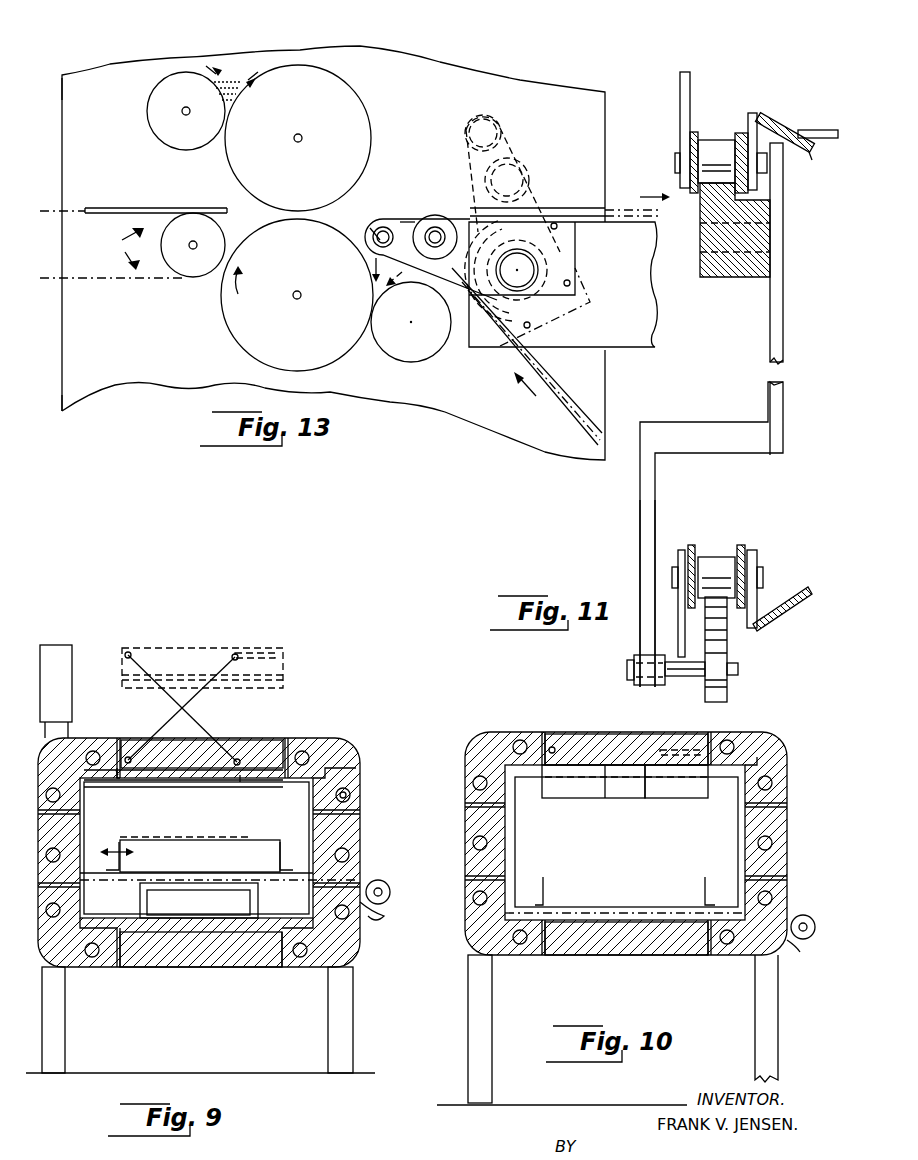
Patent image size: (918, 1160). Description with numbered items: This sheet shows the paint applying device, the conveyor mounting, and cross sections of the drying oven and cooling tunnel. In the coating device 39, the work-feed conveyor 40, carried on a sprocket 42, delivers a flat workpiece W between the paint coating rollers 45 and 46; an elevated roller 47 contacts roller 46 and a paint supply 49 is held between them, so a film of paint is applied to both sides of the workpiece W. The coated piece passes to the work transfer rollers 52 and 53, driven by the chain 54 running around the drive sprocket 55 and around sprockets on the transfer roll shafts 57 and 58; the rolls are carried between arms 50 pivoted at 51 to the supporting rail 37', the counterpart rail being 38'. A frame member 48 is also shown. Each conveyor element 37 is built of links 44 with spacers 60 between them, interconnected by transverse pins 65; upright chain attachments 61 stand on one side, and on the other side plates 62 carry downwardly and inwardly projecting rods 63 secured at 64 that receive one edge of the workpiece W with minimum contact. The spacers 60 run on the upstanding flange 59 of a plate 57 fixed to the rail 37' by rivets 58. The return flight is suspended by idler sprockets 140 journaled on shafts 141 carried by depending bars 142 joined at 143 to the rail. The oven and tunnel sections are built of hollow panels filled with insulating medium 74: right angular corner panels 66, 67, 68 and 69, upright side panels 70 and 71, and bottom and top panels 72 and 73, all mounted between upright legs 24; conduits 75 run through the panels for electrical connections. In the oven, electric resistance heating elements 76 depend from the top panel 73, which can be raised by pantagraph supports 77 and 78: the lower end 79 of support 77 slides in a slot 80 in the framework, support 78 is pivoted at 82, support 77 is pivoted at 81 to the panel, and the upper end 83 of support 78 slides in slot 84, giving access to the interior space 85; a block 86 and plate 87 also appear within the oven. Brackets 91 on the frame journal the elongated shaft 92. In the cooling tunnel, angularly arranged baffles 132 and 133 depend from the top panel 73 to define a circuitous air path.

In FIG. 9, the upright legs 24 is at (64, 1044).
In FIG. 10, the upright legs 24 is at (755, 998).
In FIG. 13, the conveyor element 37 is at (527, 356).
In FIG. 11, the conveyor element 37 is at (711, 70).
In FIG. 13, the supporting rail 37' is at (571, 298).
In FIG. 11, the supporting rail 37' is at (758, 299).
In FIG. 9, the supporting rail 37' is at (128, 856).
In FIG. 10, the supporting rail 37' is at (566, 888).
In FIG. 9, the supporting rail 38' is at (264, 856).
In FIG. 10, the supporting rail 38' is at (625, 892).
In FIG. 13, the coating device 39 is at (82, 420).
In FIG. 13, the work-feed conveyor 40 is at (119, 249).
In FIG. 13, the sprocket 42 is at (182, 266).
In FIG. 11, the links 44 is at (738, 136).
In FIG. 13, the paint coating roller 45 is at (262, 333).
In FIG. 13, the paint coating roller 46 is at (305, 85).
In FIG. 13, the elevated roller 47 is at (165, 125).
In FIG. 13, the frame 48 is at (75, 82).
In FIG. 13, the paint supply 49 is at (232, 76).
In FIG. 13, the arms 50 is at (426, 220).
In FIG. 13, the pivot 51 is at (525, 265).
In FIG. 13, the work transfer roller 52 is at (383, 222).
In FIG. 13, the work transfer roller 53 is at (442, 222).
In FIG. 13, the chain 54 is at (398, 220).
In FIG. 13, the drive sprocket 55 is at (560, 305).
In FIG. 13, the plate 57 is at (378, 234).
In FIG. 11, the plate 57 is at (726, 278).
In FIG. 13, the rivets 58 is at (430, 250).
In FIG. 11, the rivets 58 is at (724, 262).
In FIG. 13, the upstanding portion 59 is at (407, 345).
In FIG. 11, the upstanding portion 59 is at (720, 206).
In FIG. 11, the spacers 60 is at (705, 160).
In FIG. 11, the upright chain attachments 61 is at (682, 96).
In FIG. 11, the plates 62 is at (775, 125).
In FIG. 11, the rods 63 is at (810, 152).
In FIG. 11, the securing point 64 is at (762, 124).
In FIG. 11, the transverse pins 65 is at (768, 170).
In FIG. 9, the corner panel 66 is at (345, 740).
In FIG. 10, the corner panel 66 is at (758, 734).
In FIG. 9, the corner panel 67 is at (362, 948).
In FIG. 10, the corner panel 67 is at (780, 898).
In FIG. 9, the corner panel 68 is at (50, 968).
In FIG. 10, the corner panel 68 is at (470, 944).
In FIG. 9, the corner panel 69 is at (100, 745).
In FIG. 10, the corner panel 69 is at (496, 730).
In FIG. 9, the side panel 70 is at (355, 848).
In FIG. 10, the side panel 70 is at (770, 822).
In FIG. 9, the side panel 71 is at (36, 878).
In FIG. 10, the side panel 71 is at (466, 824).
In FIG. 9, the bottom panel 72 is at (255, 968).
In FIG. 10, the bottom panel 72 is at (580, 955).
In FIG. 9, the top panel 73 is at (282, 650).
In FIG. 10, the top panel 73 is at (630, 732).
In FIG. 9, the insulating medium 74 is at (358, 772).
In FIG. 10, the insulating medium 74 is at (772, 770).
In FIG. 9, the conduits 75 is at (352, 800).
In FIG. 10, the conduits 75 is at (772, 846).
In FIG. 9, the electric resistance heating elements 76 is at (180, 788).
In FIG. 9, the pantagraph support 77 is at (166, 700).
In FIG. 9, the pantagraph support 78 is at (186, 702).
In FIG. 9, the lower end 79 is at (244, 760).
In FIG. 9, the slot 80 is at (268, 788).
In FIG. 9, the pivot 81 is at (128, 652).
In FIG. 9, the pivot 82 is at (118, 780).
In FIG. 9, the upper end 83 is at (238, 654).
In FIG. 9, the slot 84 is at (256, 652).
In FIG. 9, the interior space 85 is at (166, 820).
In FIG. 9, the block 86 is at (219, 855).
In FIG. 9, the plate 87 is at (208, 913).
In FIG. 9, the brackets 91 is at (384, 908).
In FIG. 10, the brackets 91 is at (790, 958).
In FIG. 9, the elongated shaft 92 is at (380, 880).
In FIG. 10, the elongated shaft 92 is at (797, 940).
In FIG. 10, the baffle 132 is at (622, 792).
In FIG. 10, the baffle 133 is at (680, 792).
In FIG. 11, the idler sprockets 140 is at (730, 692).
In FIG. 11, the shafts 141 is at (694, 680).
In FIG. 11, the depending bars 142 is at (640, 528).
In FIG. 11, the joint 143 is at (730, 428).
In FIG. 13, the workpiece W is at (168, 206).
In FIG. 11, the workpiece W is at (816, 130).
In FIG. 9, the workpiece W is at (250, 836).